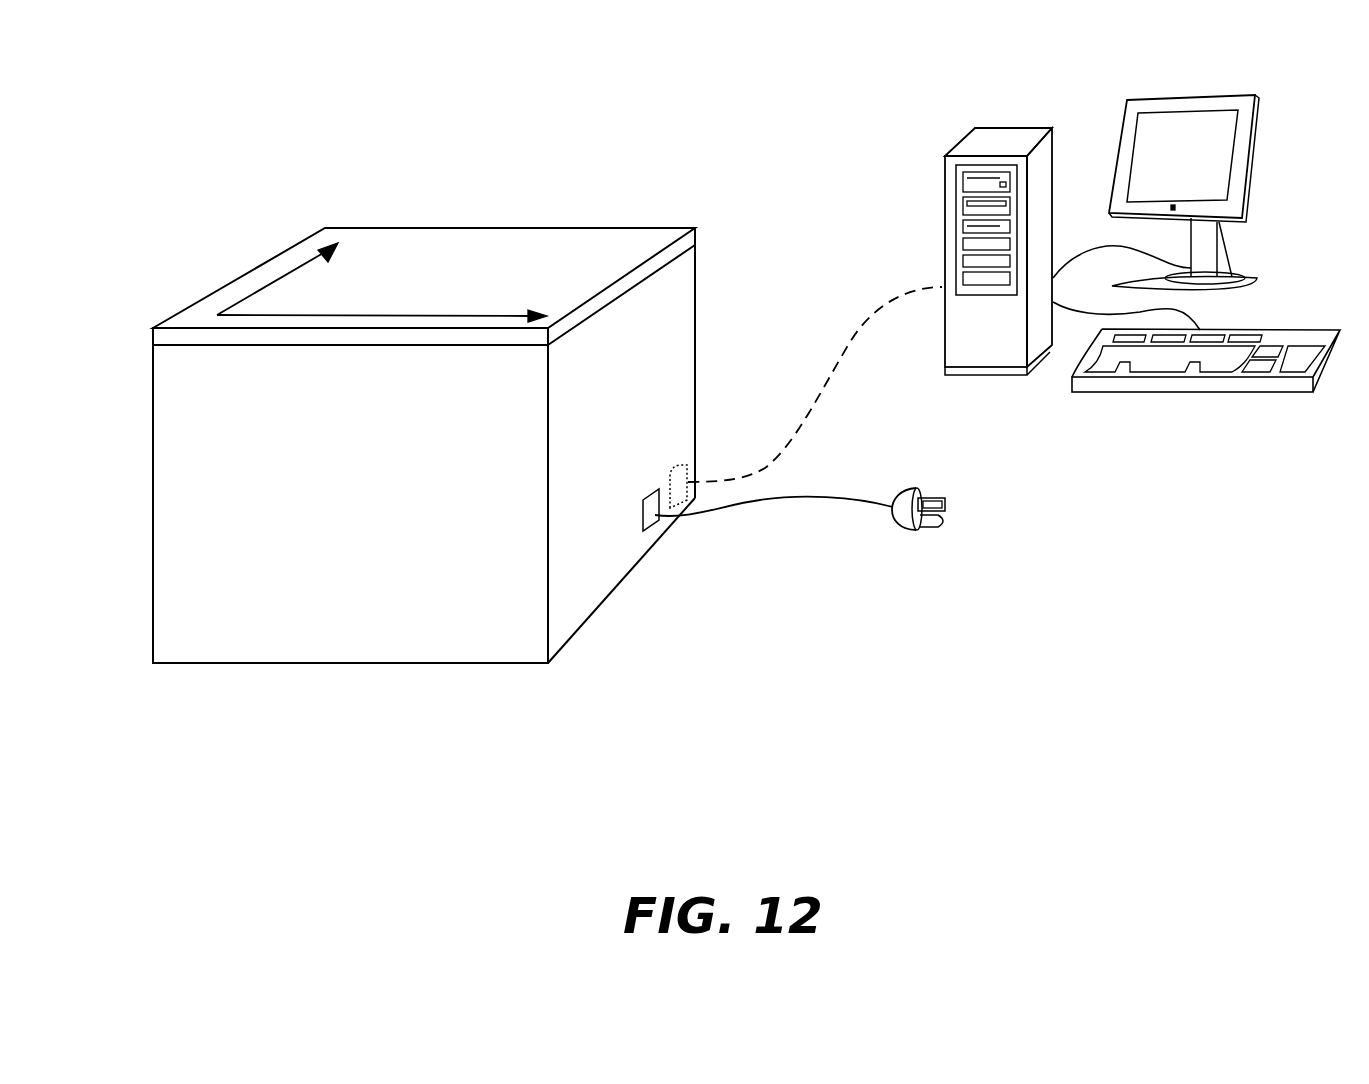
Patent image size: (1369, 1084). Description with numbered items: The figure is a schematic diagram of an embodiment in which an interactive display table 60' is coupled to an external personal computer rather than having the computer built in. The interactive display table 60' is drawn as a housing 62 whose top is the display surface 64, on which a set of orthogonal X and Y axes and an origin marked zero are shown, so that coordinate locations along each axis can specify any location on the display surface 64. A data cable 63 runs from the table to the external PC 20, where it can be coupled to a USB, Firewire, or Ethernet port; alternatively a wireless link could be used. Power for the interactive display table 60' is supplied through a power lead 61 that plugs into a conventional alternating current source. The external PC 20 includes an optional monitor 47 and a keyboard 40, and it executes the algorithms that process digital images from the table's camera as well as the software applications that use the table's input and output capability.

The interactive display table 60' is at (372, 385).
The housing 62 is at (152, 450).
The display surface 64 is at (308, 253).
The power lead 61 is at (810, 497).
The data cable 63 is at (830, 376).
The PC 20 is at (1010, 128).
The monitor 47 is at (1254, 152).
The keyboard 40 is at (1293, 330).